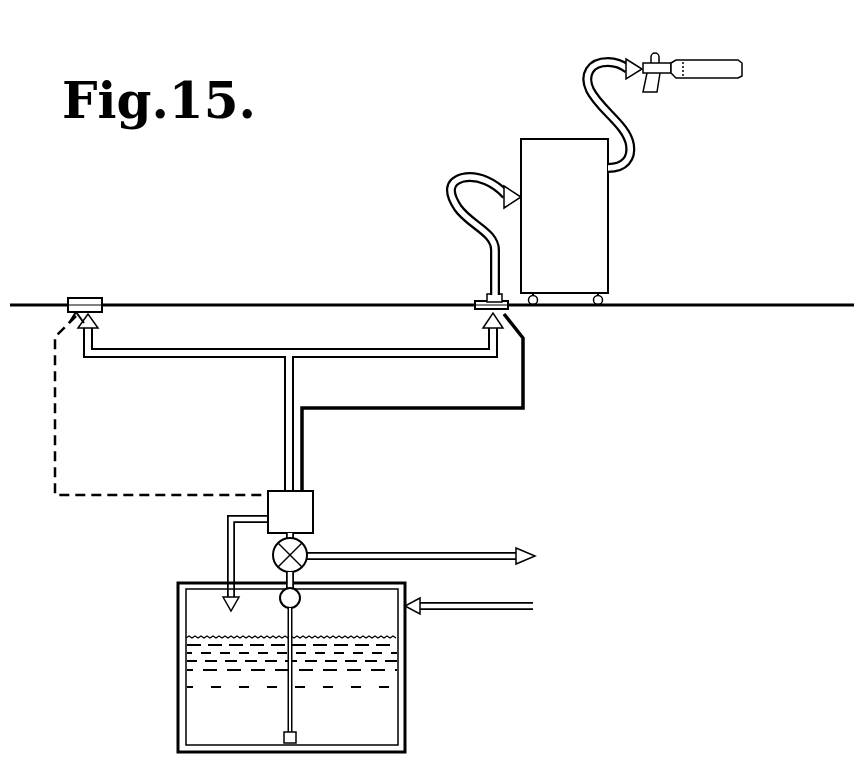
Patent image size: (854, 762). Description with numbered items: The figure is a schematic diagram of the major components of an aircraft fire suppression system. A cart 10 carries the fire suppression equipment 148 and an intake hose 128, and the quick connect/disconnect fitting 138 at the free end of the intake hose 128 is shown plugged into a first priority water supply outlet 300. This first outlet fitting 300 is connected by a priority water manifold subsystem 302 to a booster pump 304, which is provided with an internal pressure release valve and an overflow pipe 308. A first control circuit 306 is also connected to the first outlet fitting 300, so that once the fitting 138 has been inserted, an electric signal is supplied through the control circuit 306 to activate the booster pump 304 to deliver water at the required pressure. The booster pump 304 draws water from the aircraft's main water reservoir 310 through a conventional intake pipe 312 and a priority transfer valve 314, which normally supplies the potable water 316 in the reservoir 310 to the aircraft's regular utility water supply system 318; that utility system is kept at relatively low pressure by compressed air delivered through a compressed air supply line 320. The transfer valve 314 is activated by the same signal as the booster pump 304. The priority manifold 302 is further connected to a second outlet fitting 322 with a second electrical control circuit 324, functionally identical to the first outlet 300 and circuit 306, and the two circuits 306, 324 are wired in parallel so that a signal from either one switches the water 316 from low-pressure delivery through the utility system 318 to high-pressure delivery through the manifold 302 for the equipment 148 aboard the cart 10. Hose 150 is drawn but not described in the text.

The cart 10 is at (602, 224).
The intake hose 128 is at (451, 191).
The quick connect/disconnect fitting 138 is at (486, 296).
The fire suppression equipment 148 is at (712, 61).
The gun hose 150 is at (633, 147).
The first priority water supply outlet 300 is at (474, 314).
The priority water manifold subsystem 302 is at (382, 359).
The booster pump 304 is at (315, 503).
The first control circuit 306 is at (492, 410).
The overflow pipe 308 is at (228, 553).
The main water reservoir 310 is at (406, 724).
The intake pipe 312 is at (293, 695).
The priority transfer valve 314 is at (308, 545).
The potable water 316 is at (200, 668).
The regular utility water supply system 318 is at (473, 552).
The compressed air supply line 320 is at (483, 611).
The second outlet fitting 322 is at (96, 299).
The second electrical control circuit 324 is at (56, 420).